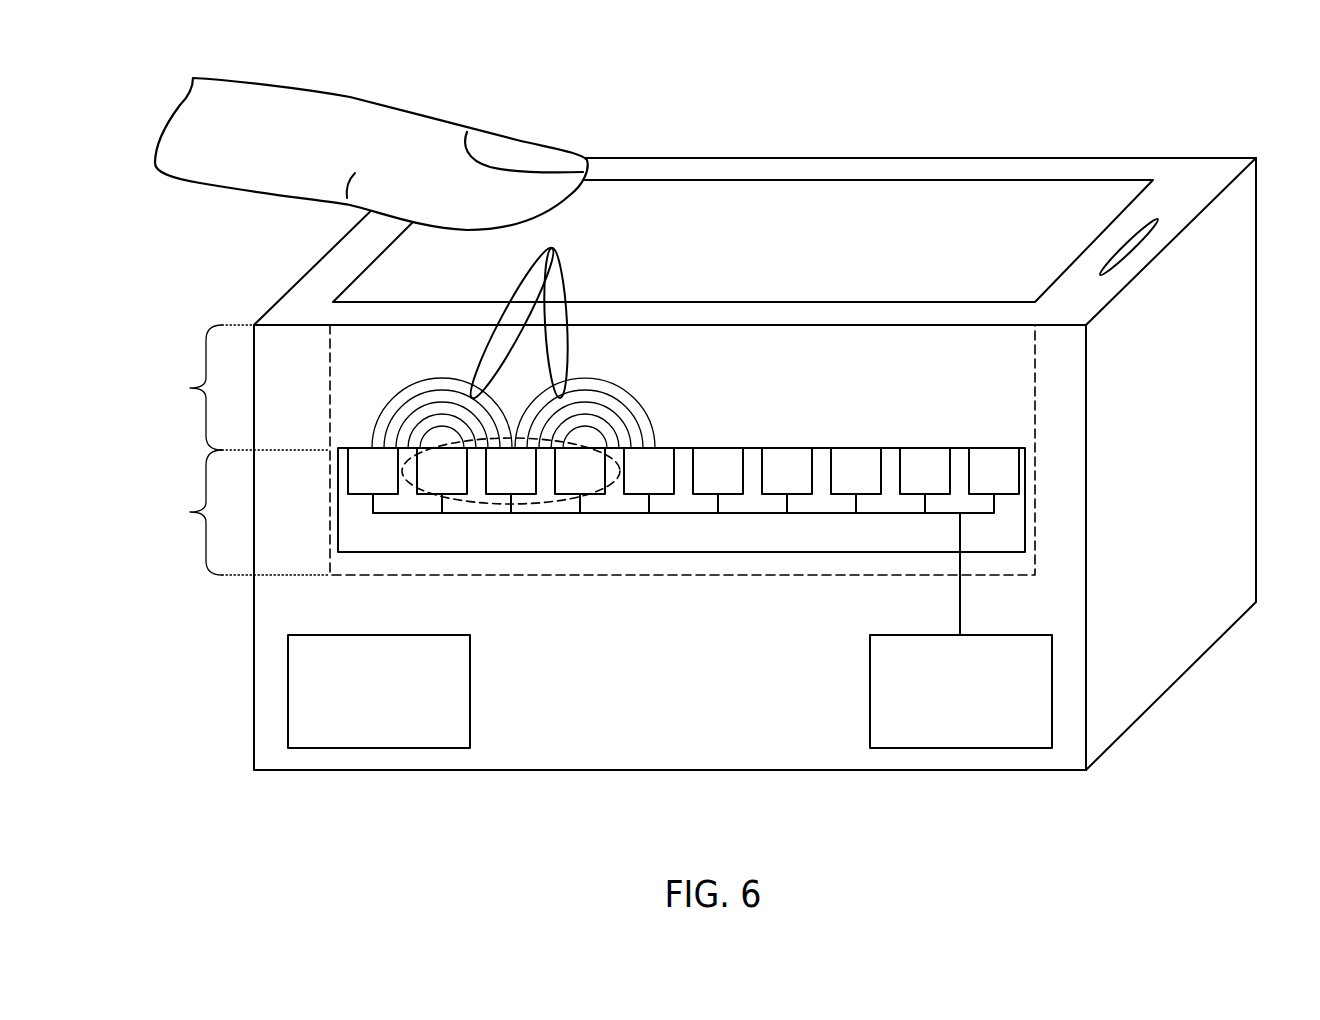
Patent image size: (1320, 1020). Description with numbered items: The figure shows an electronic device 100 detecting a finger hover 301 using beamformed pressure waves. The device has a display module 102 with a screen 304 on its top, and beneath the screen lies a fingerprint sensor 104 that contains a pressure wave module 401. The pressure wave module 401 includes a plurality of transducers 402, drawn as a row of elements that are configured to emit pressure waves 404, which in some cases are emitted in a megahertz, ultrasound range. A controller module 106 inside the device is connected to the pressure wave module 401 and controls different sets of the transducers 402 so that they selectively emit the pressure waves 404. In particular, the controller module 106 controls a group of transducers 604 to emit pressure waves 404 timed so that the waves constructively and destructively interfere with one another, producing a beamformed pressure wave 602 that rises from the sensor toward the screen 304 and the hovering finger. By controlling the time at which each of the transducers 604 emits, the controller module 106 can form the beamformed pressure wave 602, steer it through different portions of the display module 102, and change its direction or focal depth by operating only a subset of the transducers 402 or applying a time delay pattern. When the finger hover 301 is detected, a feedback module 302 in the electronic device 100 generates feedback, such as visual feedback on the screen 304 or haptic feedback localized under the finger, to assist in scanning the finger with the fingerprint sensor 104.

The electronic device 100 is at (699, 428).
The finger hover 301 is at (443, 127).
The screen 304 is at (1080, 180).
The display module 102 is at (182, 387).
The fingerprint sensor 104 is at (182, 512).
The plurality of transducers 402 is at (764, 450).
The pressure wave module 401 is at (1027, 532).
The pressure waves 404 is at (643, 412).
The beamformed pressure wave 602 is at (563, 273).
The transducers 604 is at (622, 472).
The feedback module 302 is at (327, 750).
The controller module 106 is at (878, 750).